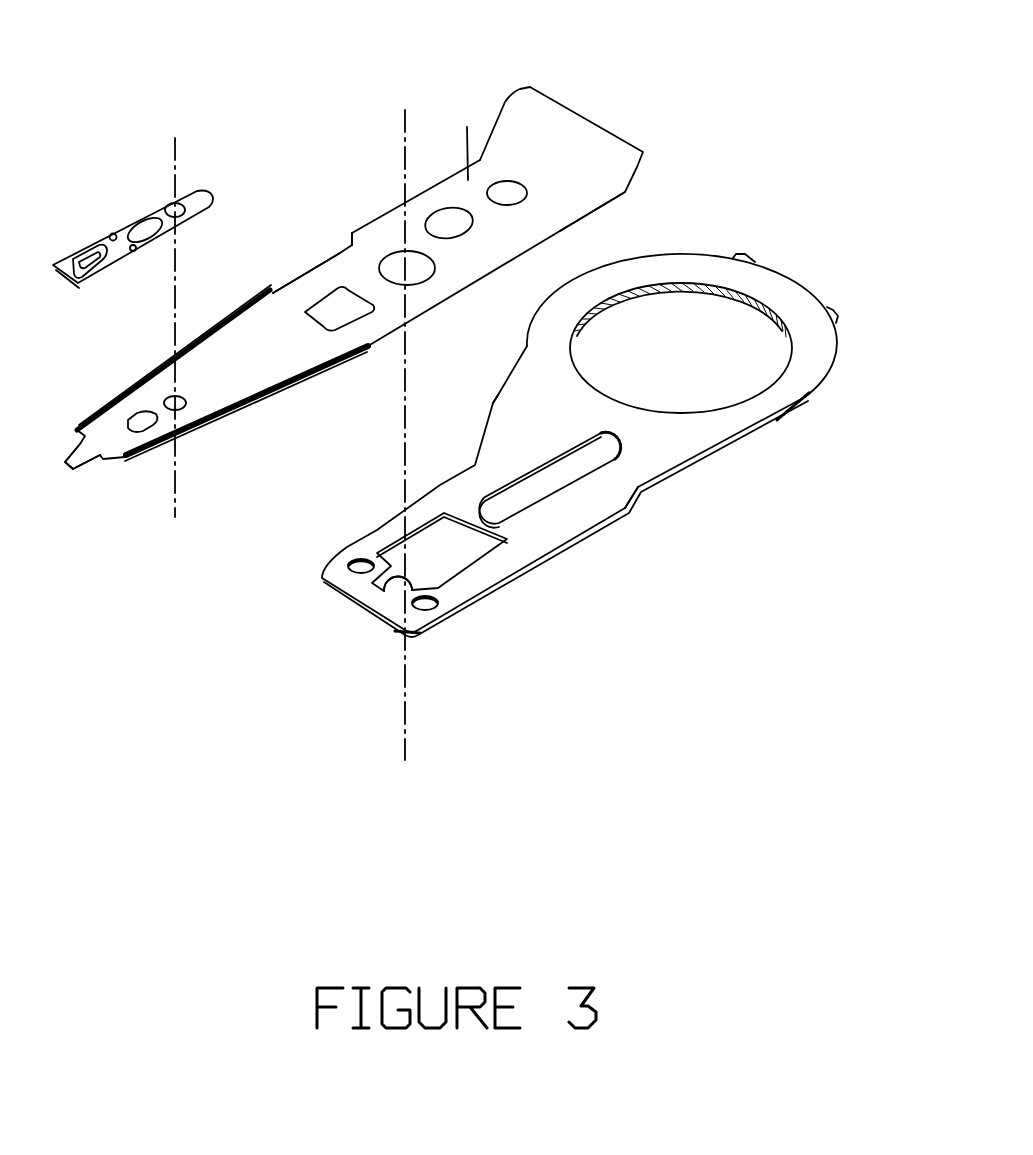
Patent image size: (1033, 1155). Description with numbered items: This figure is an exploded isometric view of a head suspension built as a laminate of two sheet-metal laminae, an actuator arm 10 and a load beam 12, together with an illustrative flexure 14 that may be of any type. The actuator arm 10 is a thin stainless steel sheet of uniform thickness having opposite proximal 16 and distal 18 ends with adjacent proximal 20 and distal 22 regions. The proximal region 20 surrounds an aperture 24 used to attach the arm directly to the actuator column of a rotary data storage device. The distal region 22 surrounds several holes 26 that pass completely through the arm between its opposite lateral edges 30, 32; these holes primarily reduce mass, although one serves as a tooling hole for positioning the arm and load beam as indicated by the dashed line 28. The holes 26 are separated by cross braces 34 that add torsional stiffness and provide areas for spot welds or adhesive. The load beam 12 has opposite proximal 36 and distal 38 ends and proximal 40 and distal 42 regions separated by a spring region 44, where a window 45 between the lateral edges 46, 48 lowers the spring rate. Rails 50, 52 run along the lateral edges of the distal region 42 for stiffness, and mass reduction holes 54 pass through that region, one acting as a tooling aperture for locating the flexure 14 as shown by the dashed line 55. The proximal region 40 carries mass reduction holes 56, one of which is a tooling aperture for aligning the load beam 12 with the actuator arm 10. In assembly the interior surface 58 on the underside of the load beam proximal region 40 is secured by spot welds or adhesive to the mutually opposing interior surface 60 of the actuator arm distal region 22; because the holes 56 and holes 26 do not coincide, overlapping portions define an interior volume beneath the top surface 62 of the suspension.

The actuator arm 10 is at (688, 265).
The load beam 12 is at (336, 284).
The flexure 14 is at (151, 310).
The proximal end 16 is at (795, 288).
The distal end 18 is at (584, 434).
The proximal region 20 is at (805, 385).
The distal region 22 is at (590, 523).
The aperture 24 is at (710, 330).
The holes 26 is at (562, 473).
The dashed line 28 is at (404, 412).
The lateral edge 30 is at (492, 420).
The lateral edge 32 is at (625, 512).
The cross braces 34 is at (362, 557).
The proximal end 36 is at (580, 114).
The distal end 38 is at (100, 457).
The proximal region 40 is at (540, 140).
The distal region 42 is at (225, 363).
The spring region 44 is at (298, 278).
The window 45 is at (333, 315).
The lateral edge 46 is at (377, 242).
The lateral edge 48 is at (453, 293).
The rail 50 is at (137, 418).
The rail 52 is at (147, 455).
The mass reduction holes 54 is at (168, 395).
The dashed line 55 is at (177, 150).
The mass reduction holes 56 is at (433, 258).
The interior surface 58 is at (592, 217).
The interior surface 60 is at (453, 503).
The top surface 62 is at (467, 127).